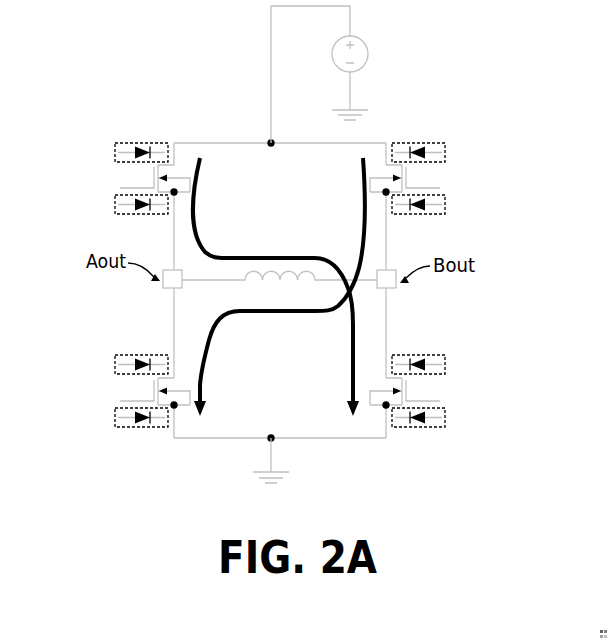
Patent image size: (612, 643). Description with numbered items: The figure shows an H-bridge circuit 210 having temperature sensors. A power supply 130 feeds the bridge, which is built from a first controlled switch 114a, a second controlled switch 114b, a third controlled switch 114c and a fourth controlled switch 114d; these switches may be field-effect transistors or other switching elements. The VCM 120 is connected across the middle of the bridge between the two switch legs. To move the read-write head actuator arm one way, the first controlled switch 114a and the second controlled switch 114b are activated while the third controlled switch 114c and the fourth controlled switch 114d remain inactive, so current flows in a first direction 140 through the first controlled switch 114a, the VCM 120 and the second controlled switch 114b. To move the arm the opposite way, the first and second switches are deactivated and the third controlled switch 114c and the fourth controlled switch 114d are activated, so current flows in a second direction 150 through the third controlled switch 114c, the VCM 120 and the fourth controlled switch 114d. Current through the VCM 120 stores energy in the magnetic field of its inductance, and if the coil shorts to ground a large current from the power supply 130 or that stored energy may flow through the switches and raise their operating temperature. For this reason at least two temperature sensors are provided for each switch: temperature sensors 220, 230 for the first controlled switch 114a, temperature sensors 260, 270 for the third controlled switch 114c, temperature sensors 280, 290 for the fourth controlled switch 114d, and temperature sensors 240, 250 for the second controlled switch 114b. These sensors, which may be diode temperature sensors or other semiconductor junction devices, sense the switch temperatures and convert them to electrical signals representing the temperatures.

The H-bridge circuit 210 is at (169, 46).
The power supply 130 is at (364, 40).
The VCM 120 is at (248, 289).
The first controlled switch 114a is at (124, 179).
The second controlled switch 114b is at (436, 390).
The third controlled switch 114c is at (436, 179).
The fourth controlled switch 114d is at (124, 390).
The temperature sensor 220 is at (152, 143).
The temperature sensor 230 is at (152, 215).
The temperature sensor 240 is at (408, 355).
The temperature sensor 250 is at (408, 428).
The temperature sensor 260 is at (408, 143).
The temperature sensor 270 is at (408, 215).
The temperature sensor 280 is at (152, 355).
The temperature sensor 290 is at (152, 428).
The first direction 140 is at (204, 206).
The second direction 150 is at (358, 220).